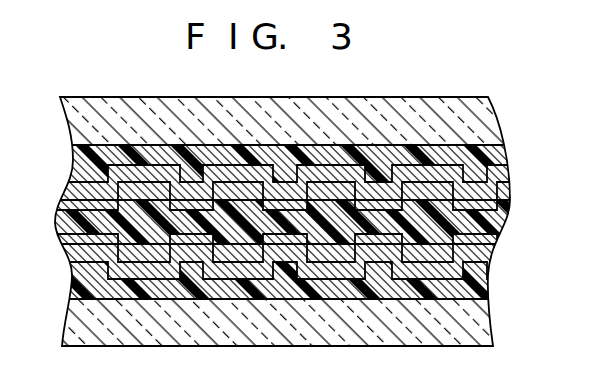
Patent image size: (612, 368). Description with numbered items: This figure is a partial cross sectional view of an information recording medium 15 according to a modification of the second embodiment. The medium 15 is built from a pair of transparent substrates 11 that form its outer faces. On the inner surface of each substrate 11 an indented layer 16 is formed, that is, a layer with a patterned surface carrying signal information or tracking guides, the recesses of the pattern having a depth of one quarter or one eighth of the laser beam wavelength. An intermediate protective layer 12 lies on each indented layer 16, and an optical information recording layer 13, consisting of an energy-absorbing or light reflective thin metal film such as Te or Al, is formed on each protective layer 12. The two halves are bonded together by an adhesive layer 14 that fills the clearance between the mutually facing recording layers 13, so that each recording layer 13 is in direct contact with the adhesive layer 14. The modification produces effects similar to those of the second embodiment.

The transparent substrate 11 is at (490, 131).
The intermediate protective layer 12 is at (500, 174).
The optical information recording layer 13 is at (500, 203).
The adhesive layer 14 is at (478, 230).
The information recording medium 15 is at (427, 92).
The indented layer 16 is at (500, 153).